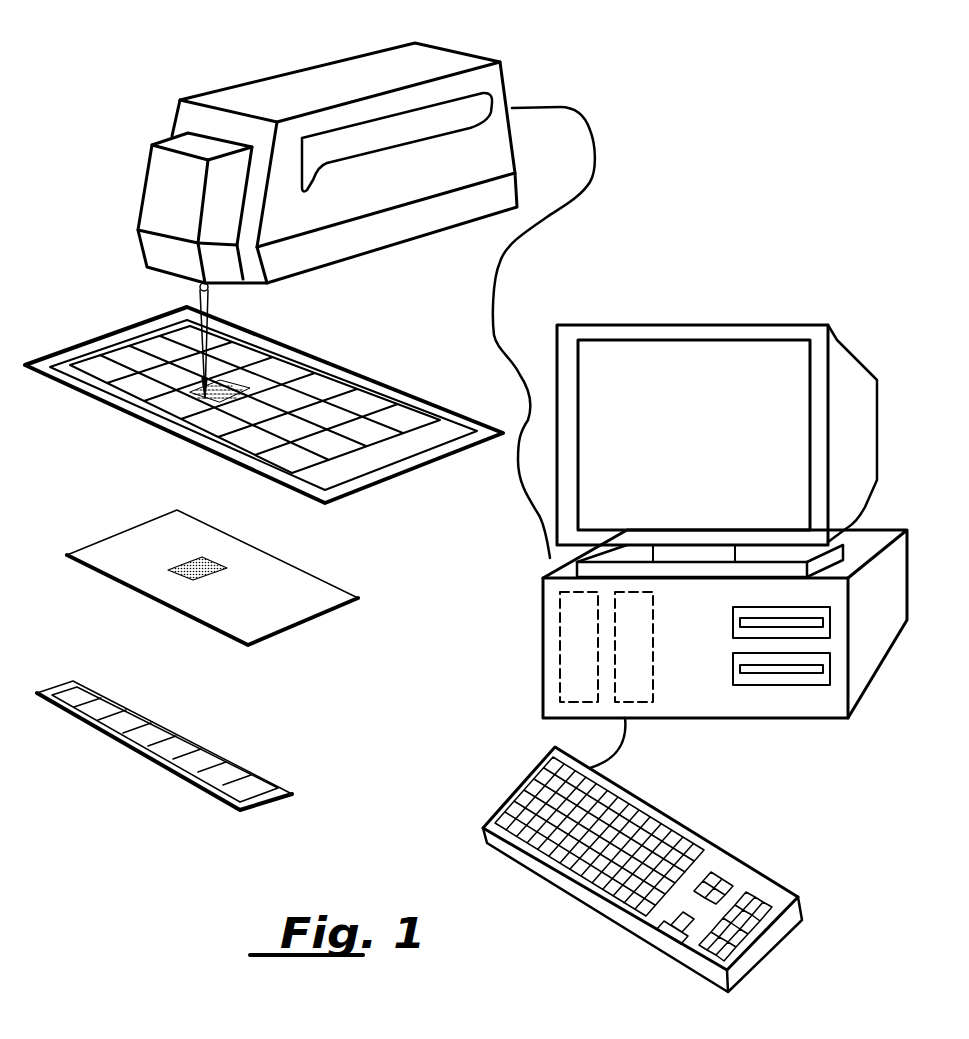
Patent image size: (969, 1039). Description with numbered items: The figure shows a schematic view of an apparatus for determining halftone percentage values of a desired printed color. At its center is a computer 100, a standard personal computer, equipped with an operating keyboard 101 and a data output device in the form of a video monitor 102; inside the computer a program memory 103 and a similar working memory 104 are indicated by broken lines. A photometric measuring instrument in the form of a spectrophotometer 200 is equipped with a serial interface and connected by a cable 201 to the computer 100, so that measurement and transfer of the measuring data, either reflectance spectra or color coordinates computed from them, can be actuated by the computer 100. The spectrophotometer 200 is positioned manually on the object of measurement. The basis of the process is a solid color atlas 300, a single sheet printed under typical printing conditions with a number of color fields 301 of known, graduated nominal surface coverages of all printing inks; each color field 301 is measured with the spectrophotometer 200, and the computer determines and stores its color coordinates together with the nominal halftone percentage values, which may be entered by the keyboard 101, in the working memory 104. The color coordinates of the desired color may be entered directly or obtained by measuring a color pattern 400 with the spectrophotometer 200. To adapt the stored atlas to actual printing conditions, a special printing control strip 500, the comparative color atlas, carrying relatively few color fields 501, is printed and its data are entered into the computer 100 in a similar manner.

The computer 100 is at (770, 707).
The operating keyboard 101 is at (655, 920).
The video monitor 102 is at (655, 368).
The program memory 103 is at (580, 618).
The working memory 104 is at (642, 668).
The spectrophotometer 200 is at (293, 83).
The cable 201 is at (580, 103).
The solid color atlas 300 is at (316, 350).
The color field 301 is at (193, 393).
The color pattern 400 is at (177, 570).
The printing control strip 500 is at (146, 770).
The color fields 501 is at (212, 770).